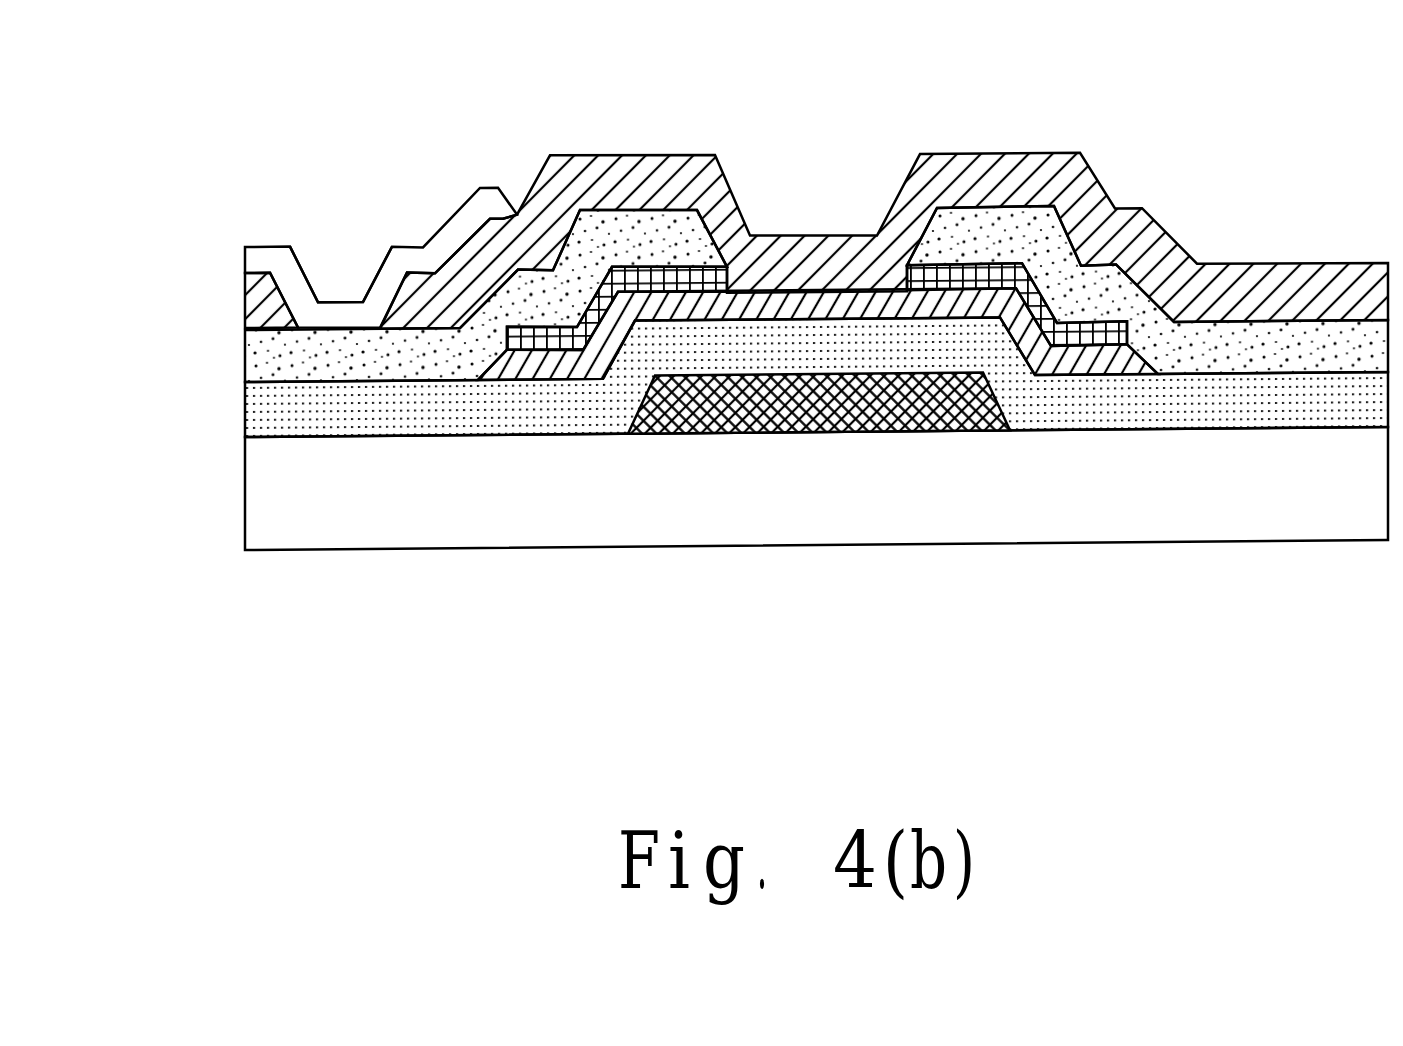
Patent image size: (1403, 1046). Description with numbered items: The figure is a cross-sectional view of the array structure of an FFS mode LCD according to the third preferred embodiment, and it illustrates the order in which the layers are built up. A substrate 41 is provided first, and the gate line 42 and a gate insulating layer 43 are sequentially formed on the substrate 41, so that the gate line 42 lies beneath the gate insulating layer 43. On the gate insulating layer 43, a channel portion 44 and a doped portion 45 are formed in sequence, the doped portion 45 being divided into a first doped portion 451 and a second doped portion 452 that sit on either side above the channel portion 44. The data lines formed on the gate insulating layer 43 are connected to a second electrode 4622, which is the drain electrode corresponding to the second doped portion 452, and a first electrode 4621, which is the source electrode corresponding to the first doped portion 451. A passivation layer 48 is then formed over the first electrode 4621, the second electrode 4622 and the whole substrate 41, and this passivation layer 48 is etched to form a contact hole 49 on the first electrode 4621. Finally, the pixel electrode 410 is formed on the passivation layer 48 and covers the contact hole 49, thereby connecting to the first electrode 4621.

The substrate 41 is at (265, 470).
The gate line 42 is at (806, 418).
The gate insulating layer 43 is at (270, 408).
The channel portion 44 is at (1050, 374).
The doped portion 45 is at (816, 352).
The first doped portion 451 is at (543, 343).
The second doped portion 452 is at (1075, 337).
The first electrode 4621 is at (669, 257).
The second electrode 4622 is at (1002, 240).
The passivation layer 48 is at (967, 173).
The contact hole 49 is at (340, 275).
The pixel electrode 410 is at (273, 262).